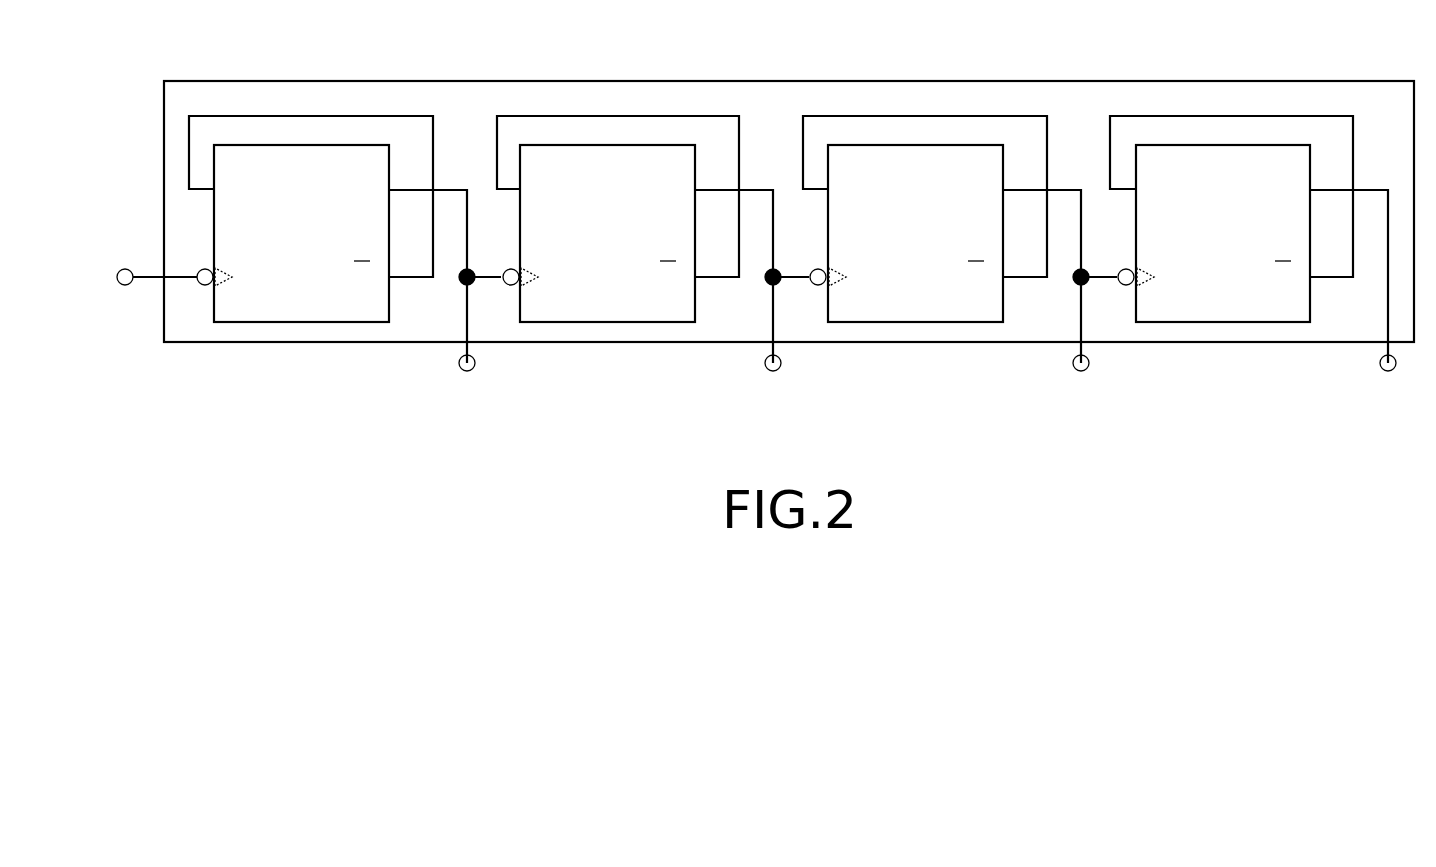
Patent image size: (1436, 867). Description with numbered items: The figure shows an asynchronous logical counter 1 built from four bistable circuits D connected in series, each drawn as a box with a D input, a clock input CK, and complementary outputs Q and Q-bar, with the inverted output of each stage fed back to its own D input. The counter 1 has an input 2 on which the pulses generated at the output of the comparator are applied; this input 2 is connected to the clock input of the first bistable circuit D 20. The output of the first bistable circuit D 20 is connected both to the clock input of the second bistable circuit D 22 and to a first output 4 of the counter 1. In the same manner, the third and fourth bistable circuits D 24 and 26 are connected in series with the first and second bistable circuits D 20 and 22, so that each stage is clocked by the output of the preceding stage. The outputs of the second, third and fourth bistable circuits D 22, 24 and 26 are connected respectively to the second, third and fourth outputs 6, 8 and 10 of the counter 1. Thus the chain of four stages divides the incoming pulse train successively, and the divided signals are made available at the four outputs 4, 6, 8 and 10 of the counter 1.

The asynchronous logical counter 1 is at (1378, 81).
The input 2 is at (124, 285).
The first output 4 is at (459, 370).
The second output 6 is at (765, 370).
The third output 8 is at (1073, 370).
The fourth output 10 is at (1380, 370).
The first bistable circuit D 20 is at (318, 312).
The second bistable circuit D 22 is at (605, 312).
The third bistable circuit D 24 is at (913, 312).
The fourth bistable circuit D 26 is at (1228, 312).